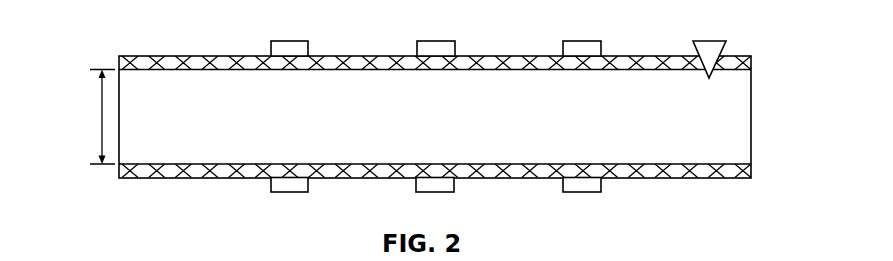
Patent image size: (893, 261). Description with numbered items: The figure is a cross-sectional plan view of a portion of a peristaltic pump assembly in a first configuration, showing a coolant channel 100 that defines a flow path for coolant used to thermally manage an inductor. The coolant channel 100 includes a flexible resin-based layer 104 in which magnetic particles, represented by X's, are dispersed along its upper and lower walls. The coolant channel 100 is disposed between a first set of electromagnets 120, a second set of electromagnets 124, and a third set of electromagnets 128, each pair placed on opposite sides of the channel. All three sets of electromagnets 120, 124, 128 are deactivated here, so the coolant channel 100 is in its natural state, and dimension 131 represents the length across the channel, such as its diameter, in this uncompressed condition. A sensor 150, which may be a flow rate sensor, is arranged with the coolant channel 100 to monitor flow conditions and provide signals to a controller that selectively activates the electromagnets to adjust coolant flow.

The coolant channel 100 is at (133, 36).
The layer 104 is at (153, 56).
The first set of electromagnets 120 is at (290, 41).
The second set of electromagnets 124 is at (436, 41).
The third set of electromagnets 128 is at (582, 41).
The dimension 131 is at (100, 127).
The sensor 150 is at (719, 46).